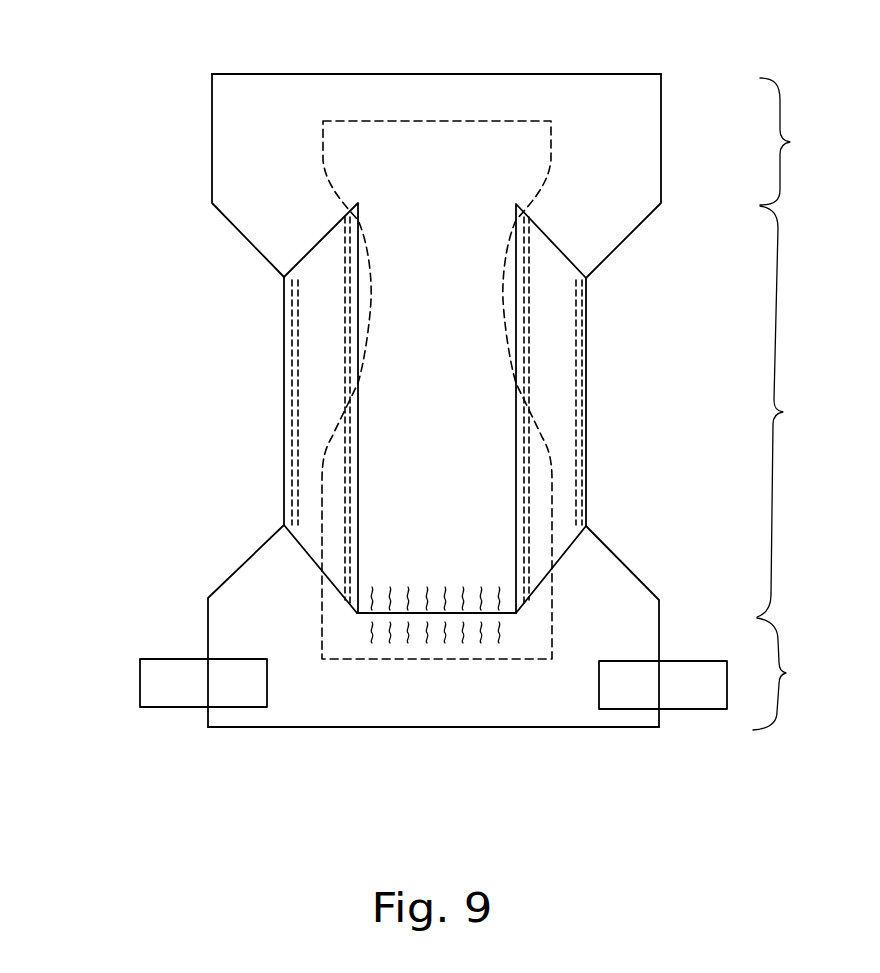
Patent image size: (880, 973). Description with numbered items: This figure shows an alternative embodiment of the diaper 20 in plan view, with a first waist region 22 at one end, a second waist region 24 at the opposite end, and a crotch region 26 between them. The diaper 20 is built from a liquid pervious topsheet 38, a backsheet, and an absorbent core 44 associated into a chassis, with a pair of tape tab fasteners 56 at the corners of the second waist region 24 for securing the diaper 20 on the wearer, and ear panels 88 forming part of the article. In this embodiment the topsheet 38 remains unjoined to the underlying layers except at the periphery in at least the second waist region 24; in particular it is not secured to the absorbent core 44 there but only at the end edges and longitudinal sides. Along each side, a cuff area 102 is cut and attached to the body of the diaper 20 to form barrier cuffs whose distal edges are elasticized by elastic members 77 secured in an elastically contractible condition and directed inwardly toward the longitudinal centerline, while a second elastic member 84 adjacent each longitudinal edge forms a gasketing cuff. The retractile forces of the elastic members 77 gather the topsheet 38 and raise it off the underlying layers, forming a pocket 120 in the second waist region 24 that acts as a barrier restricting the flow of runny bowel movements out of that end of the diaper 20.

The diaper 20 is at (155, 170).
The first waist region 22 is at (793, 141).
The second waist region 24 is at (786, 674).
The crotch region 26 is at (787, 411).
The topsheet 38 is at (500, 99).
The absorbent core 44 is at (402, 153).
The tape tab fasteners 56 is at (168, 690).
The elastic members 77 is at (342, 563).
The second elastic member 84 is at (293, 477).
The ear panels 88 is at (613, 729).
The cuff area 102 is at (320, 325).
The pocket 120 is at (418, 613).